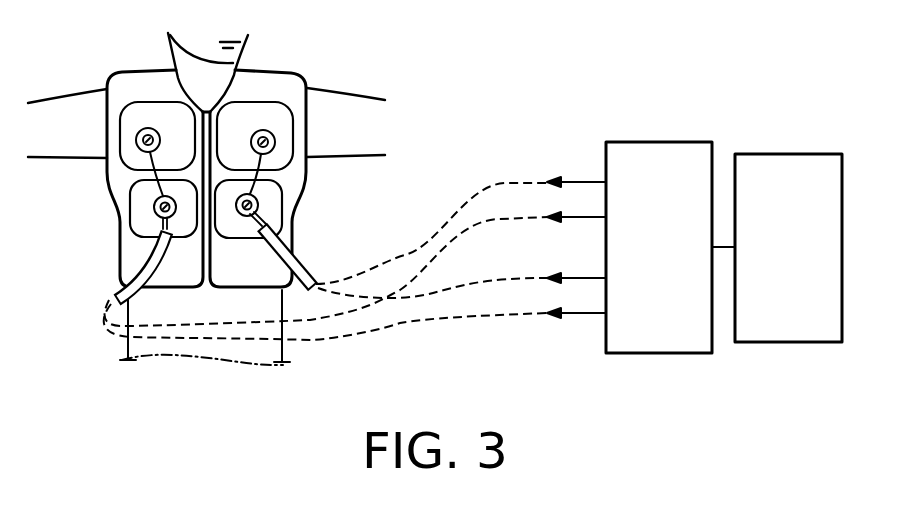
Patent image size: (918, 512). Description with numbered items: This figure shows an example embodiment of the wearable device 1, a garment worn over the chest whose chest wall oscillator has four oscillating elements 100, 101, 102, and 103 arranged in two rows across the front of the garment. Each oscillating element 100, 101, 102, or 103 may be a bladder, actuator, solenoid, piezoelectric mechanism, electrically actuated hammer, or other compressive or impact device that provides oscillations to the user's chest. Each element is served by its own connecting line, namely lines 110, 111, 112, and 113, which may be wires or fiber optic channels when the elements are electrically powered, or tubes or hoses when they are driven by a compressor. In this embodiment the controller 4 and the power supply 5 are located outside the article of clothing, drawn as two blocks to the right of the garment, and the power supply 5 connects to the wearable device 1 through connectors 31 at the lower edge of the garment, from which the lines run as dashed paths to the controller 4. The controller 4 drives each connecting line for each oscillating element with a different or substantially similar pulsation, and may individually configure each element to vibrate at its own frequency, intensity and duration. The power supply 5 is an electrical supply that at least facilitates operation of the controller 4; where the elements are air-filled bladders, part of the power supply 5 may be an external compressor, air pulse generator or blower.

The wearable device 1 is at (318, 65).
The oscillating element 100 is at (132, 122).
The oscillating element 101 is at (275, 122).
The oscillating element 102 is at (140, 200).
The oscillating element 103 is at (275, 200).
The line 110 is at (132, 165).
The line 111 is at (280, 170).
The line 112 is at (174, 229).
The line 113 is at (258, 225).
The connector 31 is at (120, 286).
The controller 4 is at (651, 263).
The power supply 5 is at (779, 263).